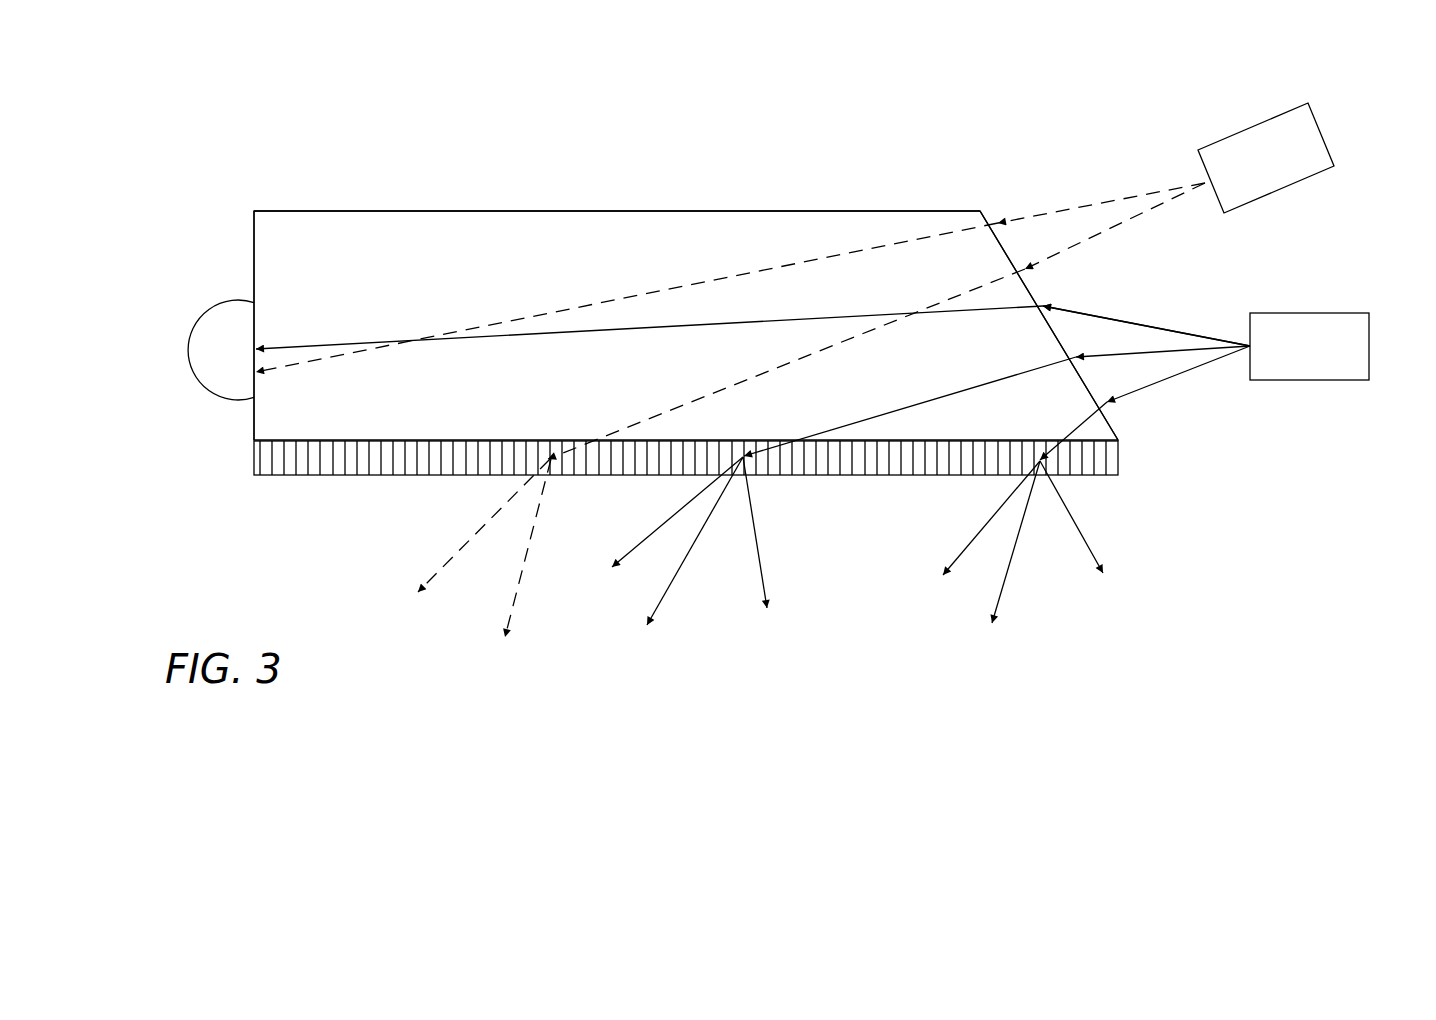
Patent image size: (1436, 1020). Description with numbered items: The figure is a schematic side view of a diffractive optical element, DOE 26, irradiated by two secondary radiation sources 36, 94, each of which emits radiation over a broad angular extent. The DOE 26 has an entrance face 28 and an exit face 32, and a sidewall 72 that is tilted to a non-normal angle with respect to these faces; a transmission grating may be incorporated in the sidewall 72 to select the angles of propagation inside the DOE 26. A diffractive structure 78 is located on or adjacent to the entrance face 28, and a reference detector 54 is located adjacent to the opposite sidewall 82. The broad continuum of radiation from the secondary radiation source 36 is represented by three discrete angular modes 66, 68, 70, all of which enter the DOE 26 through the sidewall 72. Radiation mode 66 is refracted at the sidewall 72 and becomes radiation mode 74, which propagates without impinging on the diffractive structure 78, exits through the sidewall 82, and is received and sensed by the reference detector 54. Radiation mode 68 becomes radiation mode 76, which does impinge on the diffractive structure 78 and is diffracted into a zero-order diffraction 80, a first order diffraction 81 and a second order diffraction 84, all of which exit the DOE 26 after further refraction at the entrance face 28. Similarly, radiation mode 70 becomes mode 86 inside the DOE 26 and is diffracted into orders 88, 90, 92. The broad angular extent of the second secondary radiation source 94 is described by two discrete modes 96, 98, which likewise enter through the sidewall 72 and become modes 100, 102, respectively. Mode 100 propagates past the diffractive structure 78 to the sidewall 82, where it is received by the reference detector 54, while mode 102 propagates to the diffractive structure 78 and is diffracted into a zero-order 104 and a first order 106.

The DOE 26 is at (343, 228).
The exit face 32 is at (437, 211).
The sidewall 82 is at (254, 246).
The radiation mode 70 is at (1130, 400).
The reference detector 54 is at (196, 378).
The entrance face 28 is at (1109, 477).
The diffractive structure 78 is at (848, 467).
The secondary radiation source 36 is at (1370, 344).
The secondary radiation source 94 is at (1246, 128).
The radiation mode 66 is at (1202, 338).
The radiation mode 68 is at (1163, 353).
The sidewall 72 is at (1028, 285).
The radiation mode 74 is at (664, 328).
The radiation mode 76 is at (916, 405).
The mode 86 is at (1068, 430).
The zero-order diffraction 80 is at (655, 530).
The first order diffraction 81 is at (663, 600).
The second order diffraction 84 is at (762, 565).
The diffraction order 88 is at (955, 552).
The diffraction order 90 is at (1015, 557).
The diffraction order 92 is at (1095, 557).
The mode 96 is at (1048, 212).
The mode 98 is at (1137, 215).
The mode 100 is at (916, 238).
The mode 102 is at (959, 296).
The zero-order 104 is at (467, 543).
The first order 106 is at (513, 600).